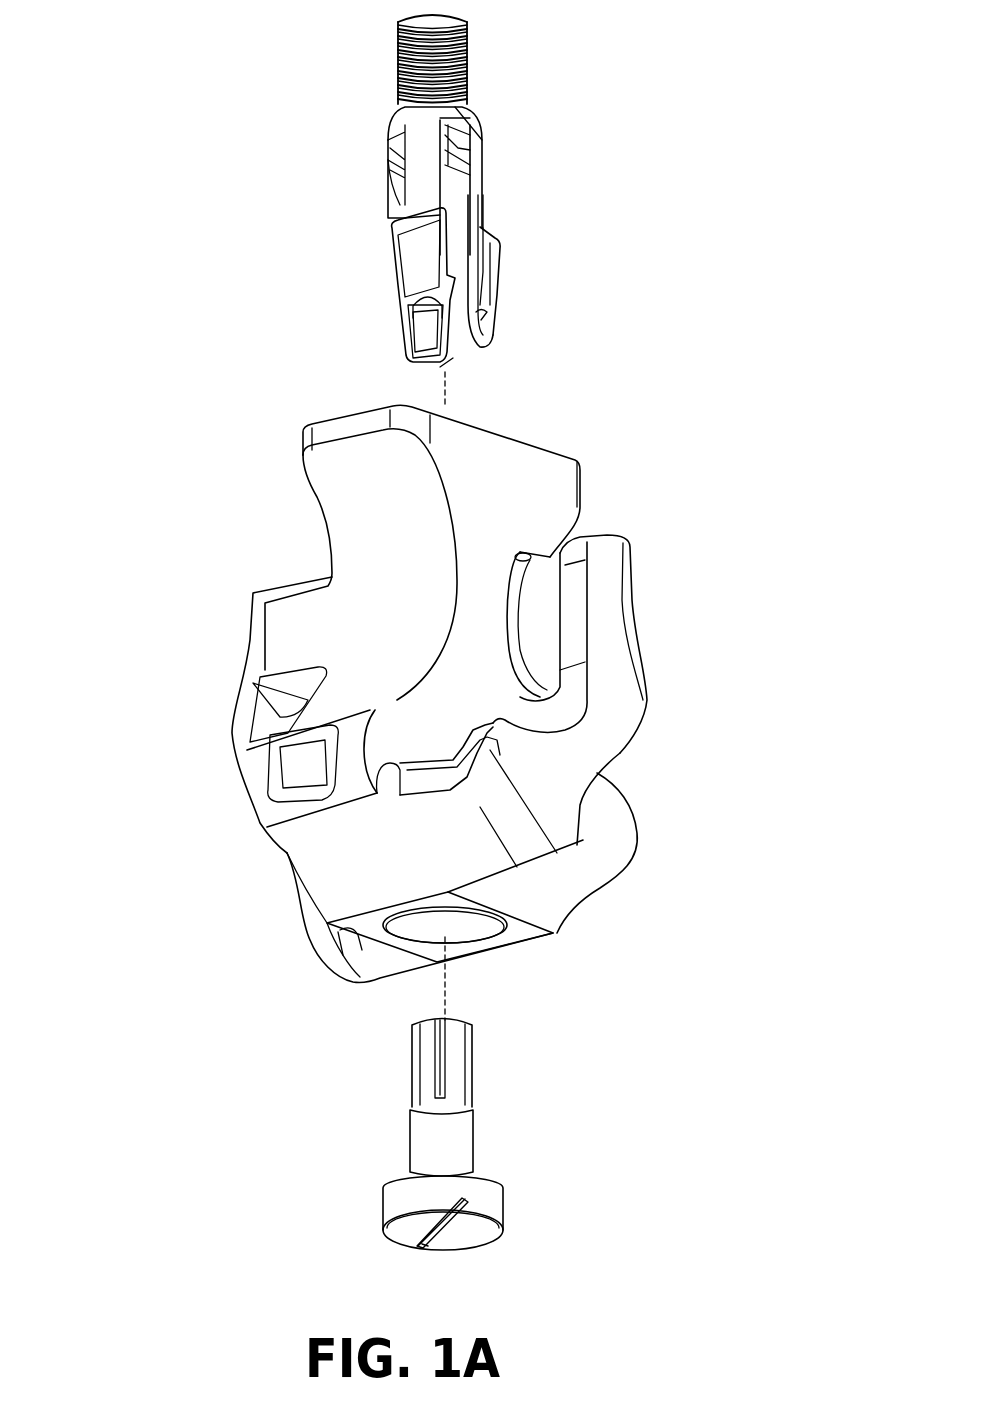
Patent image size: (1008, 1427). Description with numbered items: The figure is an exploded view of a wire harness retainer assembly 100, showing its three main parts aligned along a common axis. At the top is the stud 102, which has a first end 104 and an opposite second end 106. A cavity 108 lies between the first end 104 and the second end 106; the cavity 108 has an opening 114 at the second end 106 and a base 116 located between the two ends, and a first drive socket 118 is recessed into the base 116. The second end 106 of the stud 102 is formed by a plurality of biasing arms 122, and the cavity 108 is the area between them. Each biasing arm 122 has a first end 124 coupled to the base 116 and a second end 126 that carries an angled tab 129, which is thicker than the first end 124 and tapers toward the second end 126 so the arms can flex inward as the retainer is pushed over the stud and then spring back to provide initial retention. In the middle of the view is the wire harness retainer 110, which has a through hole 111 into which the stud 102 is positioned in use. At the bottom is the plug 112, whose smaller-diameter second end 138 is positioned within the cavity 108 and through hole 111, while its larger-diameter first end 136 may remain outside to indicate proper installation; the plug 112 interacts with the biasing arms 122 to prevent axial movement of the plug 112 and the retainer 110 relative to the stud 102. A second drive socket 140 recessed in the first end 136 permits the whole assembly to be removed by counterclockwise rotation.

The wire harness retainer assembly 100 is at (275, 64).
The stud 102 is at (575, 166).
The first end 104 is at (520, 41).
The second end 106 is at (488, 350).
The cavity 108 is at (430, 197).
The wire harness retainer 110 is at (638, 757).
The through hole 111 is at (463, 925).
The plug 112 is at (500, 1119).
The opening 114 is at (469, 352).
The base 116 is at (392, 137).
The first drive socket 118 is at (462, 123).
The biasing arms 122 is at (487, 221).
The first end 124 is at (512, 126).
The second end 126 is at (515, 337).
The angled tab 129 is at (412, 261).
The first end 136 is at (353, 1187).
The second end 138 is at (392, 1016).
The second drive socket 140 is at (430, 1244).